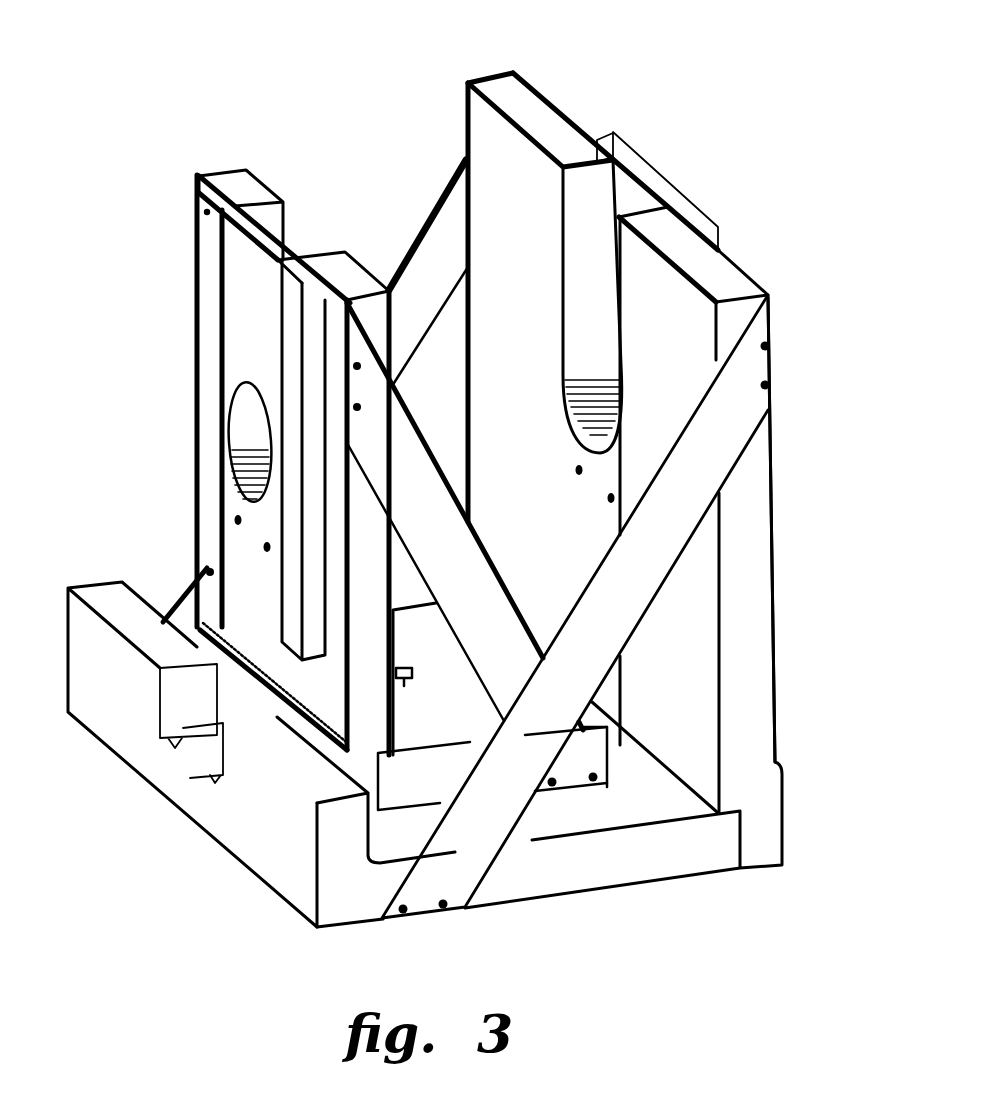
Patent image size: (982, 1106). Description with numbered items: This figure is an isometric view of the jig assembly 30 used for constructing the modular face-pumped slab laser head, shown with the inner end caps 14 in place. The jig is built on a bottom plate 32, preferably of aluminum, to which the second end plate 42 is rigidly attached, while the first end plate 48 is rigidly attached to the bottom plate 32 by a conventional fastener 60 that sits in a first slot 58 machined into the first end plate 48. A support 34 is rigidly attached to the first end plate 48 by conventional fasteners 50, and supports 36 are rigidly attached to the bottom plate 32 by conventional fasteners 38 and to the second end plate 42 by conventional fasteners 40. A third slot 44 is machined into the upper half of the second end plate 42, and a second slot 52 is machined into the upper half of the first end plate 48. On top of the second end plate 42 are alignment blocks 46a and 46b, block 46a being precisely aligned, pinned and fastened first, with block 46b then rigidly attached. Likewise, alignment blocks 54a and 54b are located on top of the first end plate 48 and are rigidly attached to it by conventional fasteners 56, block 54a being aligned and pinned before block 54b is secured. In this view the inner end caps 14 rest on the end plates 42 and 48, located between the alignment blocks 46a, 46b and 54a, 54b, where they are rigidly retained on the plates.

The inner end caps 14 is at (721, 123).
The jig assembly 30 is at (660, 118).
The bottom plate 32 is at (250, 840).
The support 34 is at (477, 545).
The supports 36 is at (575, 539).
The fasteners 38 is at (445, 910).
The fasteners 40 is at (767, 385).
The second end plate 42 is at (752, 614).
The third slot 44 is at (592, 320).
The alignment block 46a is at (608, 143).
The alignment block 46b is at (698, 213).
The first end plate 48 is at (240, 182).
The fasteners 50 is at (358, 407).
The second slot 52 is at (295, 247).
The alignment block 54a is at (205, 405).
The alignment block 54b is at (288, 318).
The fasteners 56 is at (207, 212).
The first slot 58 is at (405, 676).
The fastener 60 is at (405, 687).